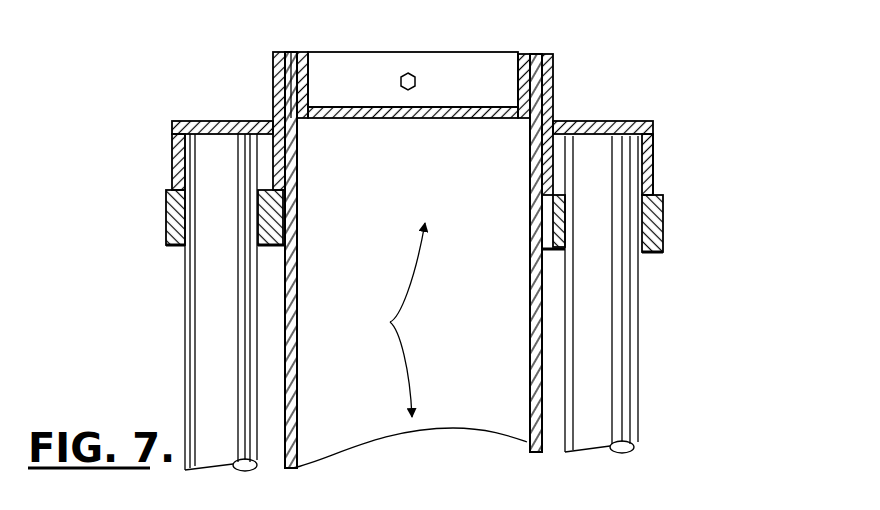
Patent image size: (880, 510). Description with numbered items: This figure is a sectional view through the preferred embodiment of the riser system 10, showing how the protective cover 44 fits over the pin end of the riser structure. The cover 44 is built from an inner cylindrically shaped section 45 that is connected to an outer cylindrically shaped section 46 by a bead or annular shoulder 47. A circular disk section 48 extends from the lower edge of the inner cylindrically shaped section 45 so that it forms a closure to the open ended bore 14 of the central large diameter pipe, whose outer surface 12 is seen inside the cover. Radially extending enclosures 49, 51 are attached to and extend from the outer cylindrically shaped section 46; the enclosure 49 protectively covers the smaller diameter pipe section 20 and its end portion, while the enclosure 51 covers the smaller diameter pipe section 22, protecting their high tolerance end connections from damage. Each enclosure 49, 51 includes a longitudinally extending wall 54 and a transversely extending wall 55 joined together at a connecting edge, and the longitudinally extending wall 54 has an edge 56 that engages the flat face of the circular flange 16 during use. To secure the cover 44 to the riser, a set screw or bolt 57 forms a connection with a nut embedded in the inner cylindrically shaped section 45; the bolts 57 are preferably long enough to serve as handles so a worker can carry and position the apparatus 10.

The riser system 10 is at (660, 53).
The outer surface 12 is at (293, 470).
The open ended bore 14 is at (392, 320).
The circular flange 16 is at (165, 232).
The smaller diameter pipe section 20 is at (183, 380).
The smaller diameter pipe section 22 is at (638, 378).
The cover 44 is at (172, 122).
The inner cylindrically shaped section 45 is at (307, 85).
The outer cylindrically shaped section 46 is at (273, 92).
The annular shoulder 47 is at (291, 52).
The circular disk section 48 is at (408, 118).
The radially extending enclosure 49 is at (172, 165).
The radially extending enclosure 51 is at (656, 150).
The longitudinally extending wall 54 is at (656, 168).
The transversely extending wall 55 is at (565, 123).
The edge 56 is at (166, 196).
The set screw 57 is at (416, 80).